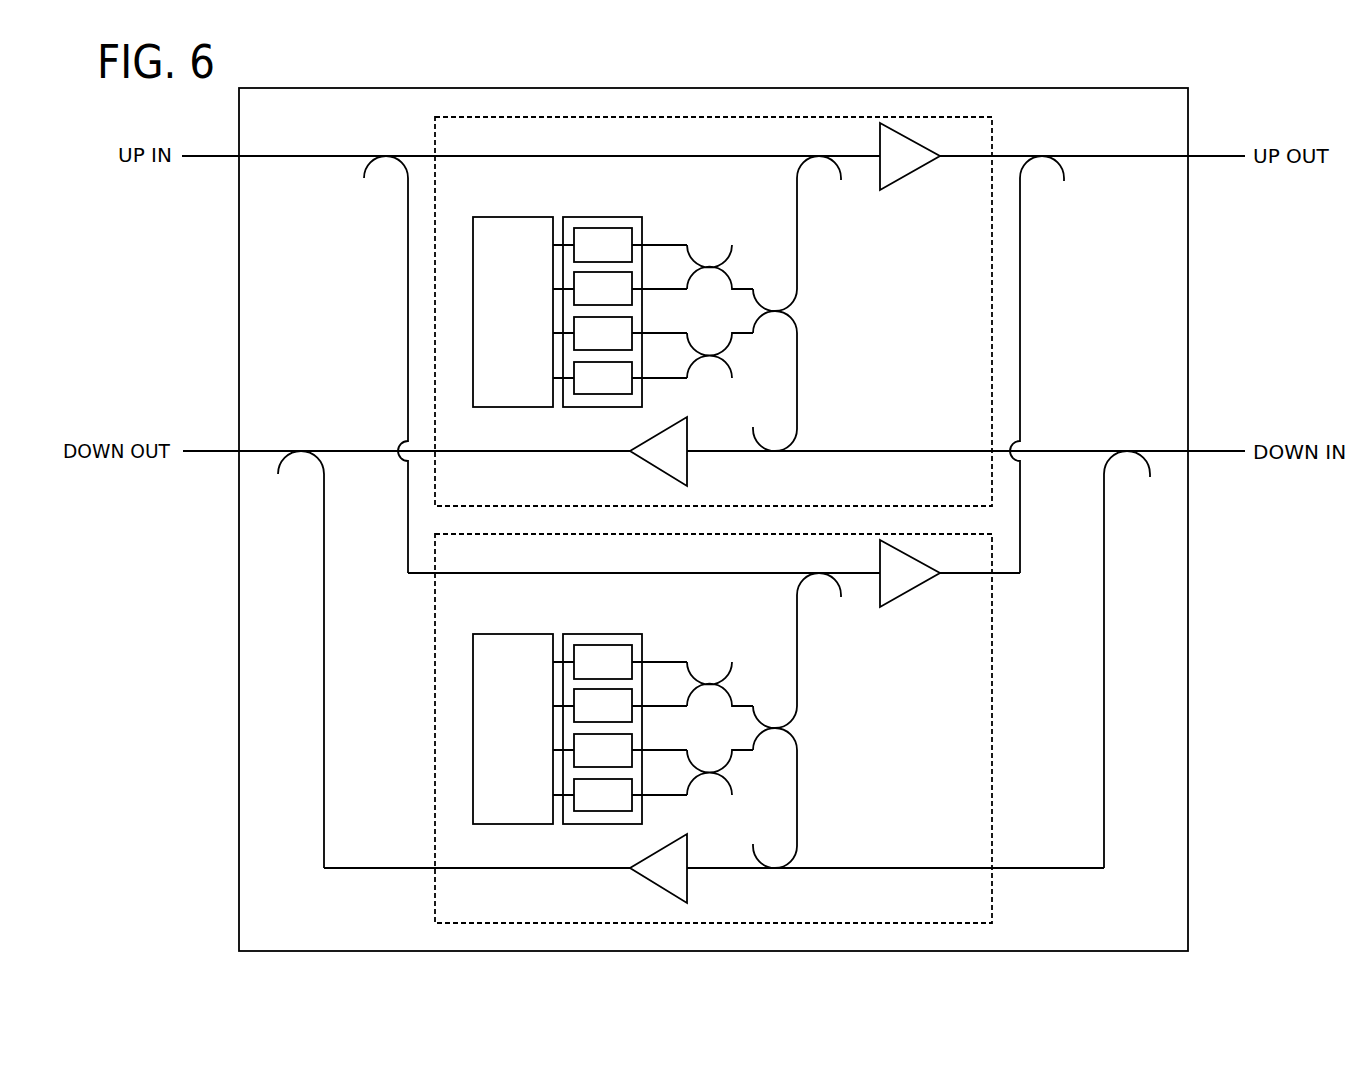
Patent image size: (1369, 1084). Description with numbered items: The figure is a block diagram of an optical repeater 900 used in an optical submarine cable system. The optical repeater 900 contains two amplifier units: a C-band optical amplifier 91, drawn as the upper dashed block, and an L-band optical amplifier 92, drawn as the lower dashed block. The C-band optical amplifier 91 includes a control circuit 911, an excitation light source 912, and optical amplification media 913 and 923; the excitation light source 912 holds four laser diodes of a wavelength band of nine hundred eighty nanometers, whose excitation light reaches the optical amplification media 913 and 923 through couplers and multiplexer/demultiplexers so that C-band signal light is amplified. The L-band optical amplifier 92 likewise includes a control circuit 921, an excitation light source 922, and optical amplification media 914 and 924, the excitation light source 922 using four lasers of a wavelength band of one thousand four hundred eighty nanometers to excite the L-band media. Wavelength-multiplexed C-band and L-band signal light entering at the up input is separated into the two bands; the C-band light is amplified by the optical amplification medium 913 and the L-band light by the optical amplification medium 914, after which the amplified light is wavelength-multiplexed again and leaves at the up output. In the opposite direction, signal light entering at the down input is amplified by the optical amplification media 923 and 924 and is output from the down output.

The optical repeater 900 is at (963, 86).
The C-band optical amplifier 91 is at (756, 306).
The L-band optical amplifier 92 is at (756, 728).
The control circuit 911 is at (515, 217).
The excitation light source 912 is at (605, 217).
The optical amplification medium 913 is at (920, 168).
The optical amplification medium 914 is at (920, 585).
The control circuit 921 is at (515, 634).
The excitation light source 922 is at (605, 634).
The optical amplification medium 923 is at (657, 467).
The optical amplification medium 924 is at (657, 884).